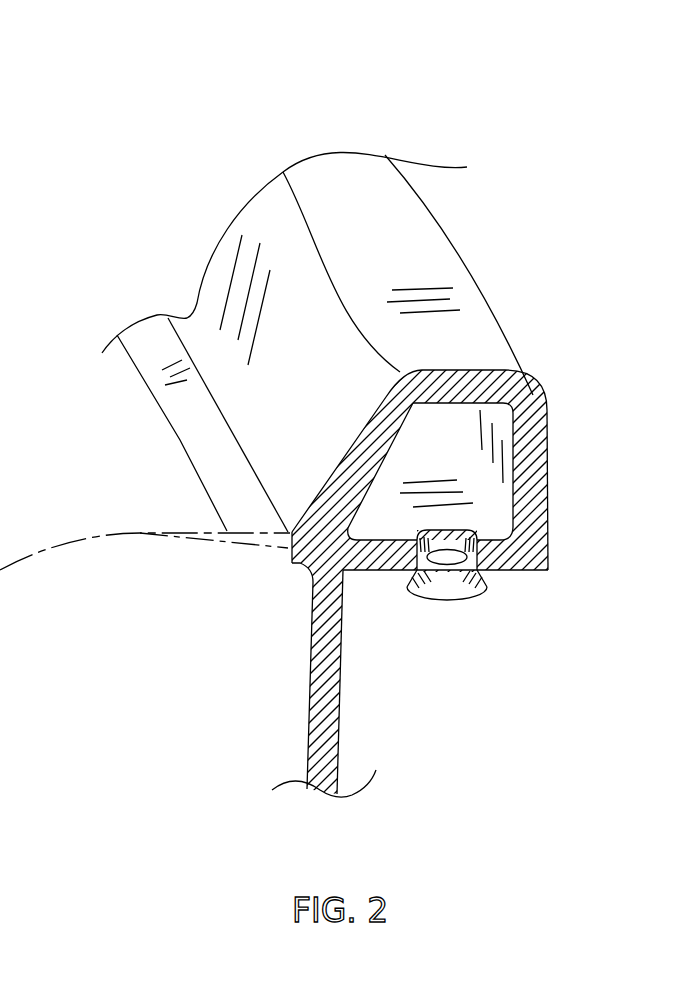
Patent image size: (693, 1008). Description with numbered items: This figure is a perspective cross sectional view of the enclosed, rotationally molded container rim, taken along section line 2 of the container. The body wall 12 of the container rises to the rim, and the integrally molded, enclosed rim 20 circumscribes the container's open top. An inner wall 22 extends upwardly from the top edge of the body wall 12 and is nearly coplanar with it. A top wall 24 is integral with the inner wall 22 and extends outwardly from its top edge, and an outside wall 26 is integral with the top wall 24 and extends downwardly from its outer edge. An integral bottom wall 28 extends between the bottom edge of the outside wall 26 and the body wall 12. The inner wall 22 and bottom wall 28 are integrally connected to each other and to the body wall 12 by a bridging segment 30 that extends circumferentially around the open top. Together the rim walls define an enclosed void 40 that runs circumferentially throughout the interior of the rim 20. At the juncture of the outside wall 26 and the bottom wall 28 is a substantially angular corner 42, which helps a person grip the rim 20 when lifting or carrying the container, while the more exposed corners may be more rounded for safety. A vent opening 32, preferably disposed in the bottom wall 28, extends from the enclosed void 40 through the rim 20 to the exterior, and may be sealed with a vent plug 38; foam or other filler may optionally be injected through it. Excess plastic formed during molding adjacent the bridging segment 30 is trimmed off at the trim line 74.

The section line 2 is at (8, 282).
The body wall 12 is at (343, 677).
The enclosed rim 20 is at (385, 321).
The inner wall 22 is at (370, 420).
The top wall 24 is at (480, 400).
The outside wall 26 is at (346, 444).
The bottom wall 28 is at (505, 537).
The bridging segment 30 is at (343, 548).
The vent opening 32 is at (450, 552).
The vent plug 38 is at (535, 561).
The enclosed void 40 is at (447, 436).
The angular corner 42 is at (548, 571).
The trim line 74 is at (288, 547).